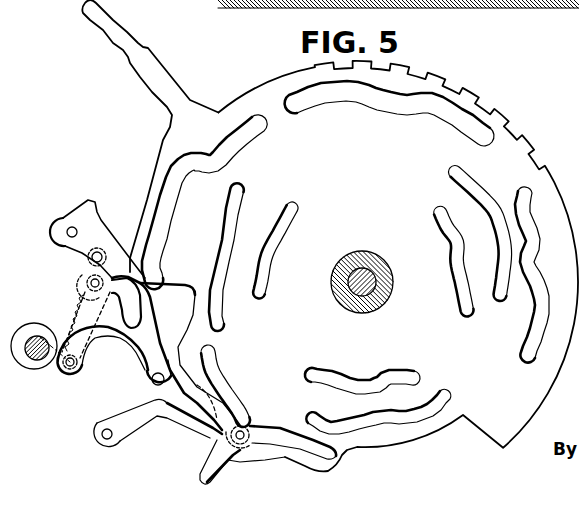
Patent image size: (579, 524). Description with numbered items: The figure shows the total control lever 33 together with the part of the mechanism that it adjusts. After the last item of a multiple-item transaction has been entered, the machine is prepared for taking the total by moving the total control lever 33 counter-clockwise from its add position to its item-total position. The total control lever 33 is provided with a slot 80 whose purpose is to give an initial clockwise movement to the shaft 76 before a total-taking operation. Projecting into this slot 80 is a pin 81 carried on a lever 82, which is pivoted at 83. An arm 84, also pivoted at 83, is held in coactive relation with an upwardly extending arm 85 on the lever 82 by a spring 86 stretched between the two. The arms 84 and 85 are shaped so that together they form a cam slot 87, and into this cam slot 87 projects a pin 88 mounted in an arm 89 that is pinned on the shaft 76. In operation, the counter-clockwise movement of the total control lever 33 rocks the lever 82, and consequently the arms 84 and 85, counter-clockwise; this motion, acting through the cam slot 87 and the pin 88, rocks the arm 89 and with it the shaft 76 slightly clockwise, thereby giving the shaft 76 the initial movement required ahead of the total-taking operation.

The total control lever 33 is at (117, 45).
The shaft 76 is at (42, 316).
The slot 80 is at (233, 384).
The pin 81 is at (246, 429).
The lever 82 is at (207, 422).
The pivot 83 is at (164, 369).
The arm 84 is at (149, 322).
The upwardly extending arm 85 is at (79, 268).
The spring 86 is at (92, 333).
The cam slot 87 is at (140, 300).
The pin 88 is at (92, 283).
The arm 89 is at (78, 313).